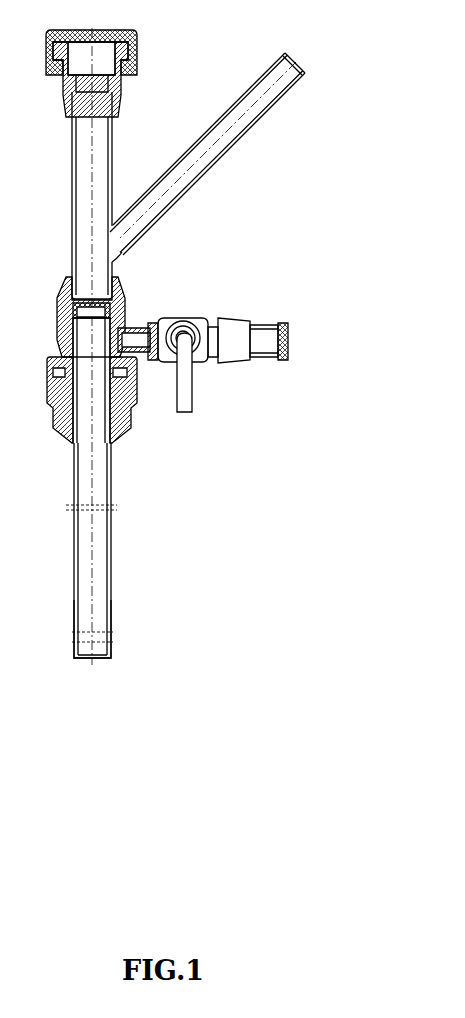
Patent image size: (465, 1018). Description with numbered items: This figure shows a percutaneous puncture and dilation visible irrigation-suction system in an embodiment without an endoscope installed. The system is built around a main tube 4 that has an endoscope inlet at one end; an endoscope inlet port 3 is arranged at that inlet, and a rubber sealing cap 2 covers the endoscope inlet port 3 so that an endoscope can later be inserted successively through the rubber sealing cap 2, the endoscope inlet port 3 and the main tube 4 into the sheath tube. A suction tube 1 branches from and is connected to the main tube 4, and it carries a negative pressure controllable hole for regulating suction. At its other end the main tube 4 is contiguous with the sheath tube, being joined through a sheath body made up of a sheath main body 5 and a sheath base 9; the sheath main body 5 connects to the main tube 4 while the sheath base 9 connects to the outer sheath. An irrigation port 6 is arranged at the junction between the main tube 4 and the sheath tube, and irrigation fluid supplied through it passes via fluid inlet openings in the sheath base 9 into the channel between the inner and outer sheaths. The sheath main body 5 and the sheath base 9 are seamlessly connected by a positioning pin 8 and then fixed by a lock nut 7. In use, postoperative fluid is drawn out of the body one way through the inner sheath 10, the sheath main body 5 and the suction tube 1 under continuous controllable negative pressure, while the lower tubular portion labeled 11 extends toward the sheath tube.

The suction tube 1 is at (295, 64).
The rubber sealing cap 2 is at (138, 43).
The endoscope inlet port 3 is at (138, 67).
The main tube 4 is at (107, 147).
The sheath main body 5 is at (120, 283).
The irrigation port 6 is at (283, 322).
The lock nut 7 is at (133, 368).
The positioning pin 8 is at (138, 378).
The sheath base 9 is at (140, 397).
The inner sheath 10 is at (113, 435).
The pipe end 11 is at (112, 483).